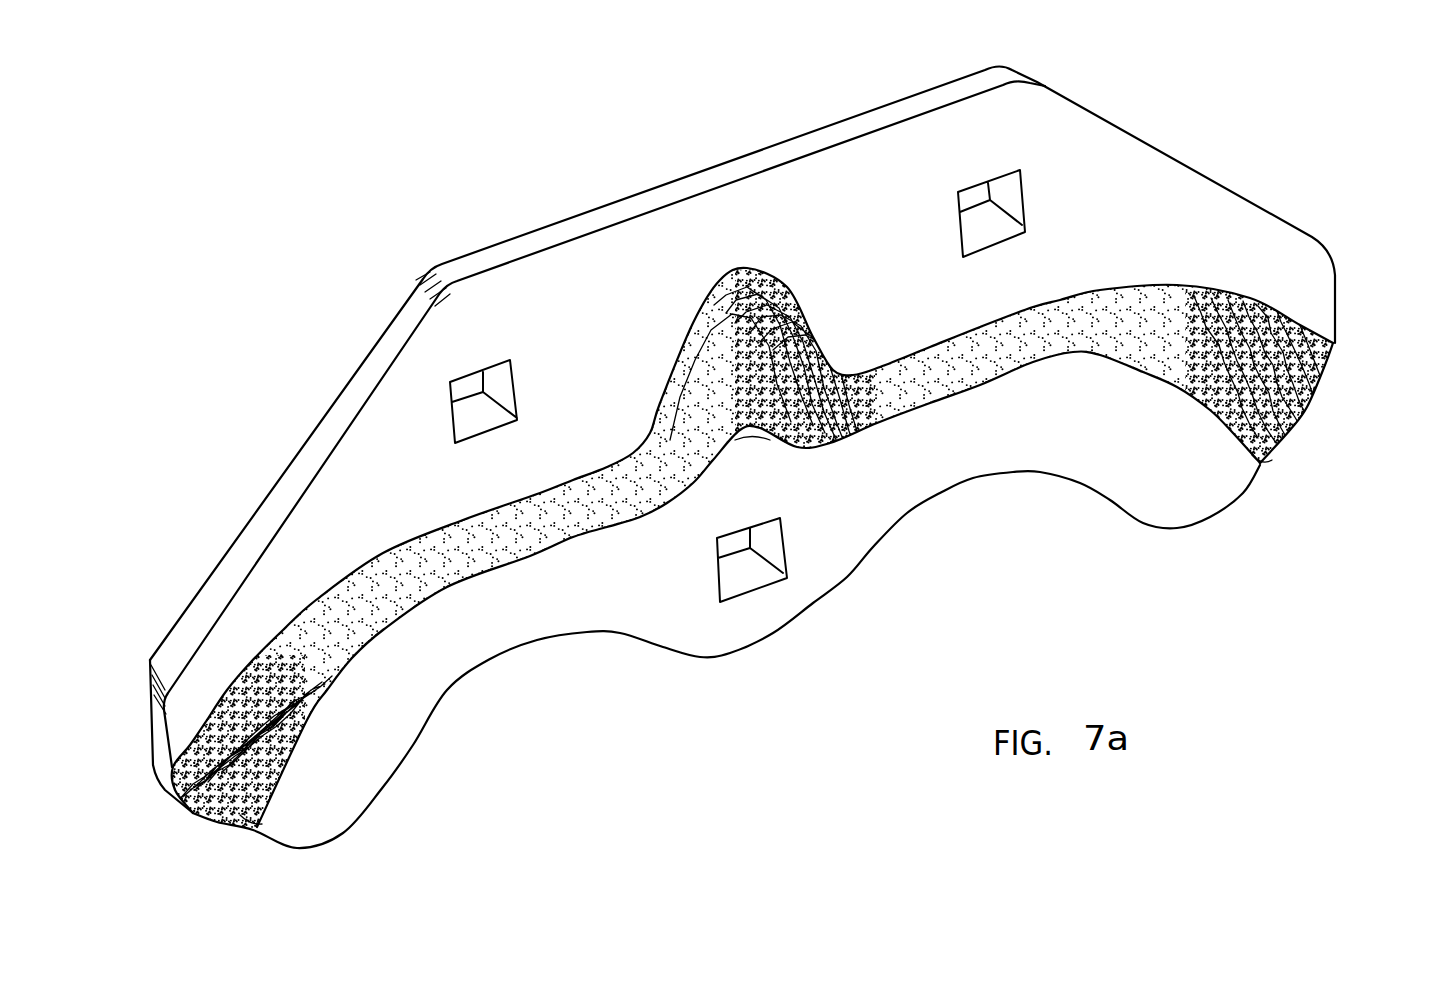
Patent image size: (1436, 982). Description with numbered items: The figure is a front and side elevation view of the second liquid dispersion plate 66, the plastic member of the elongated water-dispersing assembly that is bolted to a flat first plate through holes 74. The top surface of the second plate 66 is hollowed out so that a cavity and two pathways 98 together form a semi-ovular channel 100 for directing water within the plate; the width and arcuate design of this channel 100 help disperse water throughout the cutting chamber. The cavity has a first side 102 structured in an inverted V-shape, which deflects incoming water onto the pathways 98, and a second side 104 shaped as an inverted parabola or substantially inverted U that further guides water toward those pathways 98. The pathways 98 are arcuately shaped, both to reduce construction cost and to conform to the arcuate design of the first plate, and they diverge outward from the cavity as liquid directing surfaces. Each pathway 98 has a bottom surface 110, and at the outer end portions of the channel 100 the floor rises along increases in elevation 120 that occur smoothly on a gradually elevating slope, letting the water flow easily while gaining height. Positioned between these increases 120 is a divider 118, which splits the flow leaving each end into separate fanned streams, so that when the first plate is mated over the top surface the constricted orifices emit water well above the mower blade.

The second liquid dispersion plate 66 is at (418, 120).
The hole 74 is at (977, 183).
The pathways 98 is at (477, 520).
The semi-ovular channel 100 is at (568, 553).
The first side 102 is at (755, 430).
The side 104 is at (715, 290).
The bottom surface 110 is at (1008, 355).
The divider 118 is at (208, 810).
The increases in elevation 120 is at (243, 830).